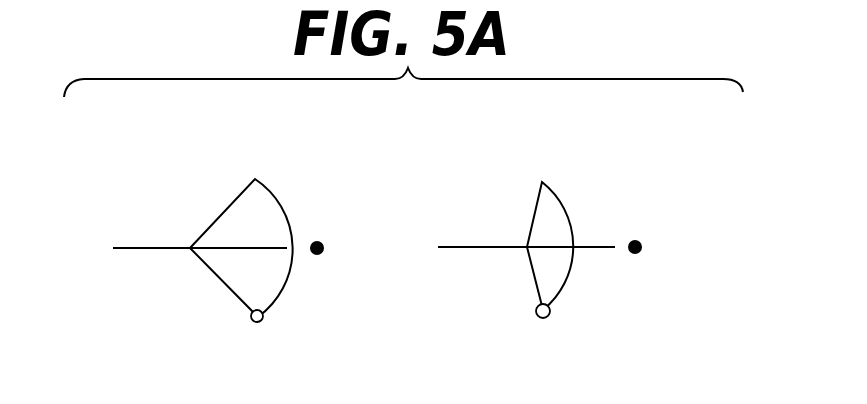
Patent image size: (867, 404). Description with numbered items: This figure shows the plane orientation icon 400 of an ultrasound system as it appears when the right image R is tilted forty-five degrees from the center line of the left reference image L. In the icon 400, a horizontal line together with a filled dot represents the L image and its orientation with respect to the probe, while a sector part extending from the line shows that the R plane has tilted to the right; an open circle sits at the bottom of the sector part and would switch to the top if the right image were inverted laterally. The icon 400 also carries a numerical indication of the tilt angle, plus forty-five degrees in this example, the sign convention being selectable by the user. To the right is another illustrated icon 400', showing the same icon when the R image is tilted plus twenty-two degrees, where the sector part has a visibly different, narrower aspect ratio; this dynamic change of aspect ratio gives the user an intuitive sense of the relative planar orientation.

The plane orientation icon 400 is at (234, 245).
The plane orientation icon 400' is at (594, 229).